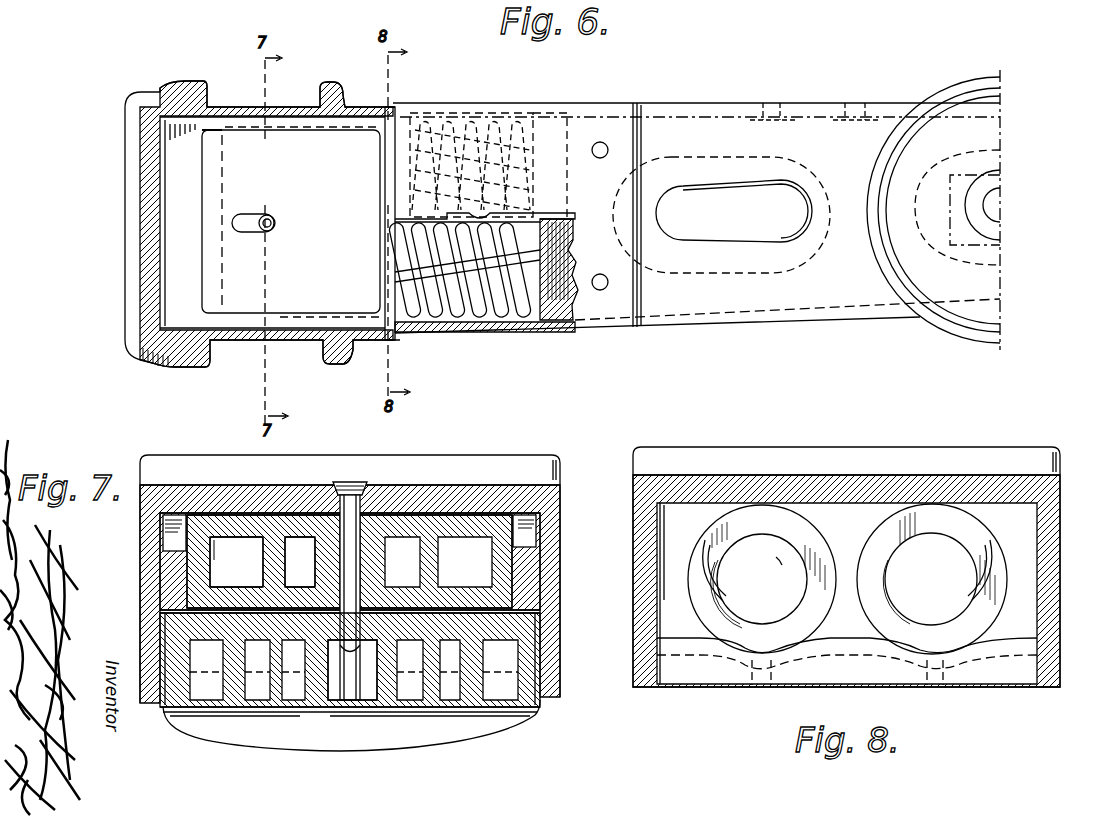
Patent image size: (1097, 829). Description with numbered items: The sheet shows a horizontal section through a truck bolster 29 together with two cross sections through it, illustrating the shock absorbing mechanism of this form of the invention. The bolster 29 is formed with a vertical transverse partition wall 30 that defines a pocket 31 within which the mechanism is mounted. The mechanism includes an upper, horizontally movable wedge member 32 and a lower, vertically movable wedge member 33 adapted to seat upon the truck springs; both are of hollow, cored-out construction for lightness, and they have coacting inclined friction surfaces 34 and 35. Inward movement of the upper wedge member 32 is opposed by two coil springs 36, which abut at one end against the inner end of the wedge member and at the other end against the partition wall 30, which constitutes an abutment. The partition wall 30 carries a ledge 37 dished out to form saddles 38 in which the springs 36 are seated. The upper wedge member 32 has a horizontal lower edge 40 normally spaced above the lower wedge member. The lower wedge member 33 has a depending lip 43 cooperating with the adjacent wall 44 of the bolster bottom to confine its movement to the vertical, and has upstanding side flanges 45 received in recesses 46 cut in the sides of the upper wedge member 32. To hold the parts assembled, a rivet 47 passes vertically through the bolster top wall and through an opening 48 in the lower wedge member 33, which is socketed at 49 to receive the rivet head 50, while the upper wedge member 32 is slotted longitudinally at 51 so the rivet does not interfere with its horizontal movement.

In FIG. 6, the bolster 29 is at (632, 326).
In FIG. 7, the bolster 29 is at (556, 650).
In FIG. 8, the bolster 29 is at (765, 458).
In FIG. 6, the partition wall 30 is at (545, 268).
In FIG. 6, the pocket 31 is at (498, 324).
In FIG. 8, the pocket 31 is at (829, 569).
In FIG. 6, the upper wedge member 32 is at (291, 221).
In FIG. 6, the lower wedge member 33 is at (170, 290).
In FIG. 7, the inclined friction surface 34 is at (235, 612).
In FIG. 7, the inclined friction surface 35 is at (215, 640).
In FIG. 6, the coil spring 36 is at (462, 125).
In FIG. 8, the coil spring 36 is at (877, 535).
In FIG. 6, the ledge 37 is at (520, 222).
In FIG. 8, the ledge 37 is at (838, 652).
In FIG. 8, the saddle 38 is at (960, 650).
In FIG. 7, the horizontal lower edge 40 is at (556, 603).
In FIG. 6, the depending lip 43 is at (368, 312).
In FIG. 7, the depending lip 43 is at (266, 740).
In FIG. 6, the wall 44 is at (405, 322).
In FIG. 6, the side flange 45 is at (258, 330).
In FIG. 7, the side flange 45 is at (568, 545).
In FIG. 6, the recess 46 is at (318, 318).
In FIG. 7, the recess 46 is at (568, 524).
In FIG. 6, the rivet 47 is at (276, 220).
In FIG. 7, the rivet 47 is at (352, 481).
In FIG. 7, the opening 48 is at (349, 561).
In FIG. 7, the socket 49 is at (350, 700).
In FIG. 7, the rivet head 50 is at (352, 670).
In FIG. 6, the longitudinal slot 51 is at (244, 212).
In FIG. 7, the longitudinal slot 51 is at (345, 572).